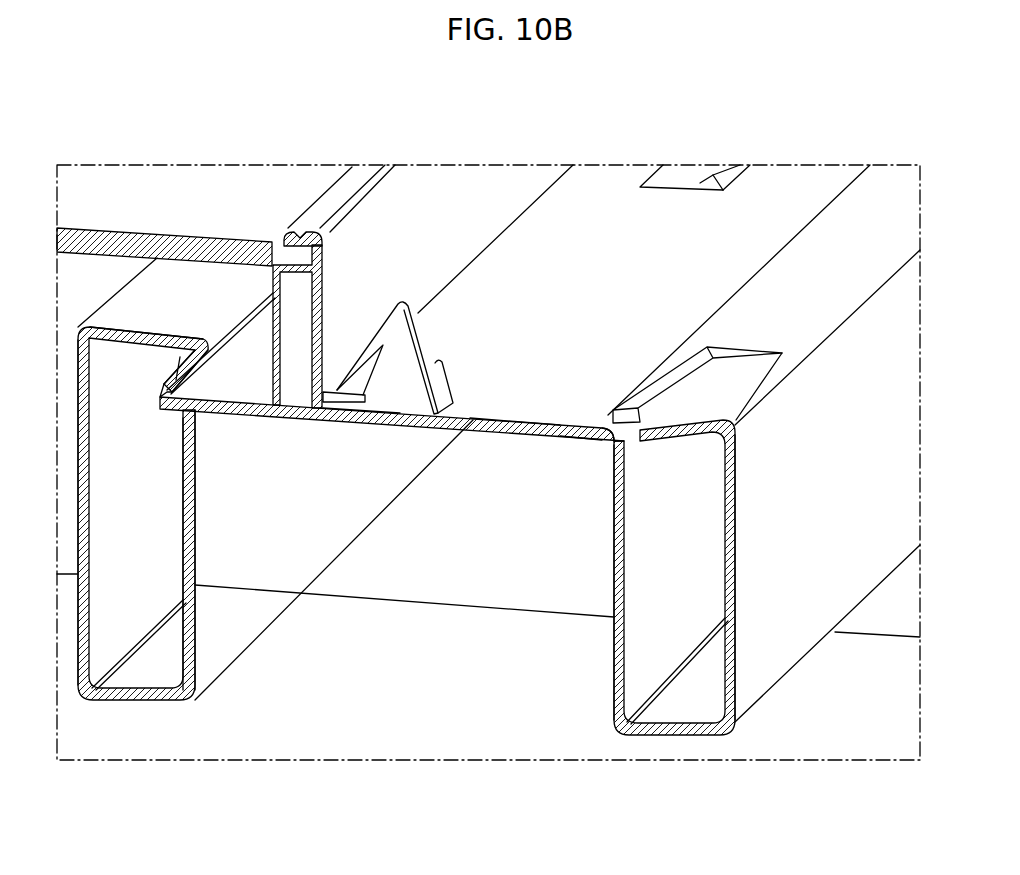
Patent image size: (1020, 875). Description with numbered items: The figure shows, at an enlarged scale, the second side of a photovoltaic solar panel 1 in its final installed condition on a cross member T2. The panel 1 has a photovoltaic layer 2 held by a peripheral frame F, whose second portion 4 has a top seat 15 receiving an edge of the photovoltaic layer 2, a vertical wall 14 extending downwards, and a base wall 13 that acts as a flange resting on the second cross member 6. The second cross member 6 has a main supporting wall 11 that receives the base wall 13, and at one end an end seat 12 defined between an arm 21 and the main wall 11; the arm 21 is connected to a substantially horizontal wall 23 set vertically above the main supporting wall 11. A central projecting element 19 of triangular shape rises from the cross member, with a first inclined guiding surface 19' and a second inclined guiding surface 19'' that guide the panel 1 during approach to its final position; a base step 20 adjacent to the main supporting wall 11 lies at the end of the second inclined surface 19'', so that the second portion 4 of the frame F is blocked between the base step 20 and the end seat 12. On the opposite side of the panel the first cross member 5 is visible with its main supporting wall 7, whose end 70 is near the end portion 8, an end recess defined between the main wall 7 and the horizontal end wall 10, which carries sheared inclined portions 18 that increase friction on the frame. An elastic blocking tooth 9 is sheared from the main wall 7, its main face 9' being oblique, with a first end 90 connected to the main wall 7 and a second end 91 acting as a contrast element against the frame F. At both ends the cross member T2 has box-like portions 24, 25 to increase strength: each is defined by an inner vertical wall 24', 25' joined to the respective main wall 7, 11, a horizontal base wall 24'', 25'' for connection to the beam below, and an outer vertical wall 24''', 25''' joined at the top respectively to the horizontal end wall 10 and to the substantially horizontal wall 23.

The photovoltaic solar panel 1 is at (95, 205).
The photovoltaic layer 2 is at (160, 237).
The second portion of the frame 4 is at (485, 212).
The first cross member 5 is at (570, 452).
The second cross member 6 is at (220, 418).
The main supporting wall 7 is at (515, 412).
The end portion 8 is at (614, 432).
The elastic blocking tooth 9 is at (726, 207).
The main face of the tooth 9' is at (684, 212).
The horizontal end wall 10 is at (785, 285).
The main supporting wall 11 is at (262, 412).
The end seat 12 is at (168, 402).
The base wall 13 is at (300, 402).
The vertical wall 14 is at (268, 305).
The seat 15 is at (300, 228).
The inclined portion 18 is at (700, 380).
The central projecting element 19 is at (380, 319).
The first inclined guiding surface 19' is at (463, 360).
The second inclined guiding surface 19'' is at (365, 333).
The base step 20 is at (365, 408).
The arm 21 is at (178, 376).
The substantially horizontal wall 23 is at (130, 325).
The box-like portion 24 is at (767, 492).
The inner vertical wall 24' is at (767, 577).
The horizontal base wall 24'' is at (677, 671).
The outer vertical wall 24''' is at (655, 582).
The box-like portion 25 is at (106, 513).
The inner vertical wall 25' is at (334, 560).
The horizontal base wall 25'' is at (121, 632).
The outer vertical wall 25''' is at (116, 512).
The end of the main wall 70 is at (596, 470).
The first end of the tooth 90 is at (655, 172).
The second end of the tooth 91 is at (745, 178).
The peripheral frame F is at (348, 183).
The cross member T2 is at (380, 660).